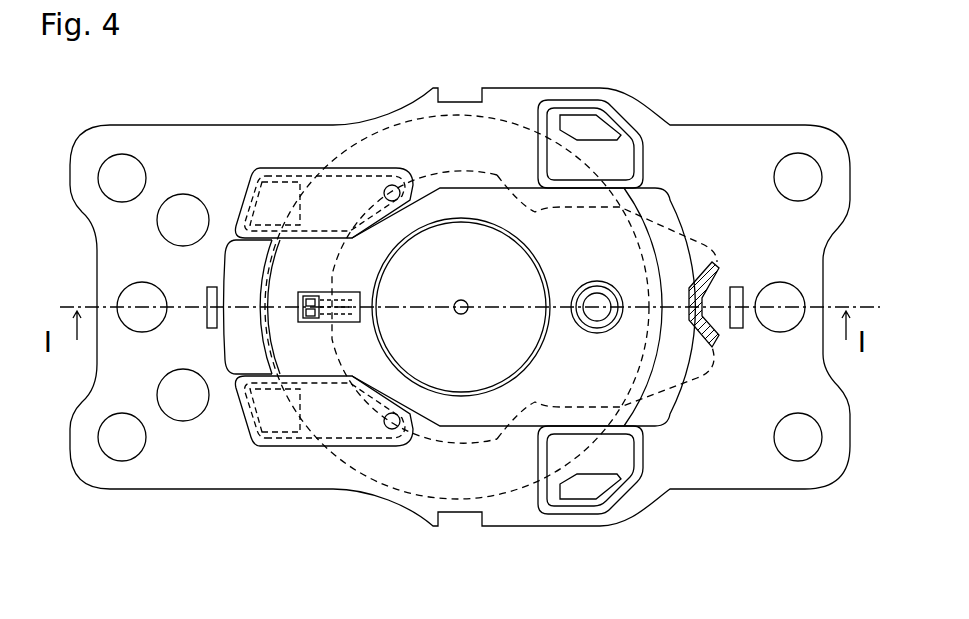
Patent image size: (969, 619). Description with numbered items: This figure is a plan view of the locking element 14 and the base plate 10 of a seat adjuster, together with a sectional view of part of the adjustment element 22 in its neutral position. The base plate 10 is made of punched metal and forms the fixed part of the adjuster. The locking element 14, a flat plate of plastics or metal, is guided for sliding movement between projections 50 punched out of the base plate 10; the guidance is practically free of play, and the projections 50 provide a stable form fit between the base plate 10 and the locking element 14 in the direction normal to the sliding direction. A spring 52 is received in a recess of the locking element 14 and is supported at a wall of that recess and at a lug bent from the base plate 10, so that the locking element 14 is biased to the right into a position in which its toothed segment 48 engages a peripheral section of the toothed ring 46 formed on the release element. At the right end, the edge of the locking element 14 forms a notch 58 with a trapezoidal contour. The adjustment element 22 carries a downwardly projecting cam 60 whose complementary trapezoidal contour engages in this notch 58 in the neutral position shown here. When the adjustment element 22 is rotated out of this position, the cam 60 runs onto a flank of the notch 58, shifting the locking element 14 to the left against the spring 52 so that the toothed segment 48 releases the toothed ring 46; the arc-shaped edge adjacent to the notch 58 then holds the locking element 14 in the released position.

The base plate 10 is at (736, 122).
The locking element 14 is at (516, 186).
The adjustment element 22 is at (702, 240).
The toothed ring 46 is at (397, 490).
The toothed segment 48 is at (237, 335).
The projections 50 is at (297, 170).
The spring 52 is at (333, 292).
The notch 58 is at (680, 313).
The cam 60 is at (702, 308).